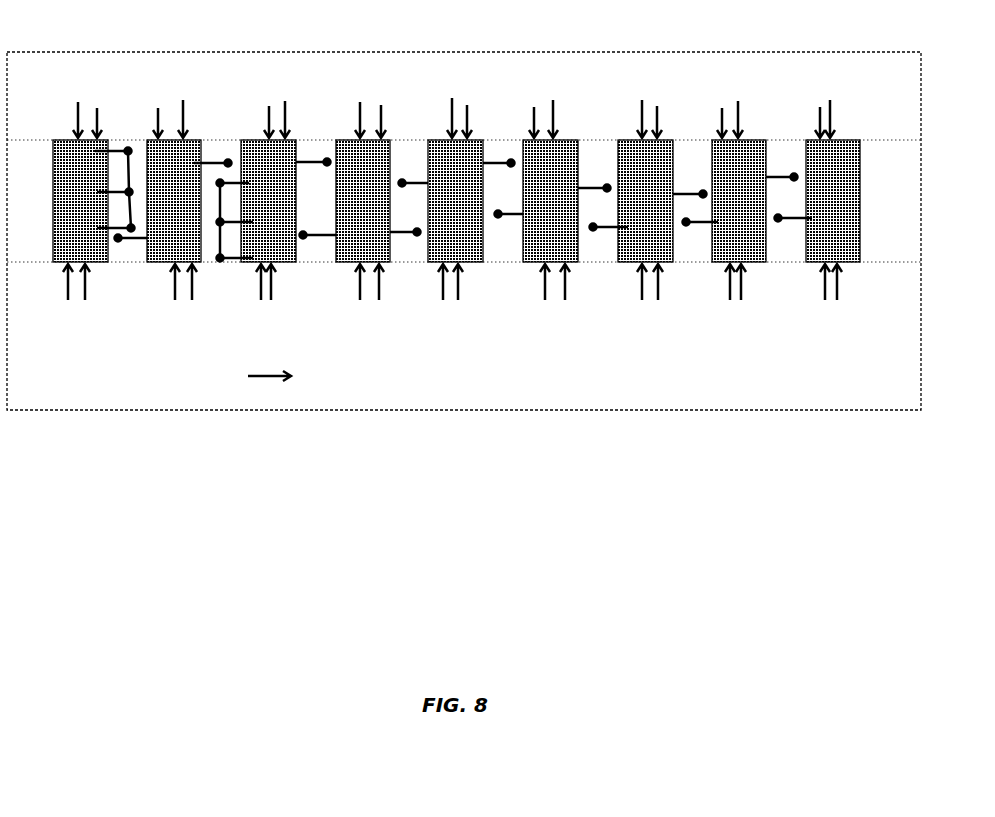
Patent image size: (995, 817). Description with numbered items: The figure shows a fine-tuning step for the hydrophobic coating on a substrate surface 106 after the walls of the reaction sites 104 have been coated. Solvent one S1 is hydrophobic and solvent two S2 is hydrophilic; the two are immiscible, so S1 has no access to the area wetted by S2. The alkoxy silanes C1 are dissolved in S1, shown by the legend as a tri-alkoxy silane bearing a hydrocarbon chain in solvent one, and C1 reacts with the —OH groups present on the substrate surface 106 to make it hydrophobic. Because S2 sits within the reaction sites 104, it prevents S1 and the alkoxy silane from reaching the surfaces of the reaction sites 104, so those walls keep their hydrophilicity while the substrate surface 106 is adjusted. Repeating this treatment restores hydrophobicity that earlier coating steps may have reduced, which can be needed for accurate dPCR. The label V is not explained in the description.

The reaction sites 104 is at (425, 202).
The substrate surface 106 is at (523, 137).
The solvent 1 S1 is at (112, 248).
The solvent 2 S2 is at (456, 187).
The vapor stream V is at (274, 210).
The alkoxy silanes dissolved in S1 C1 is at (408, 377).